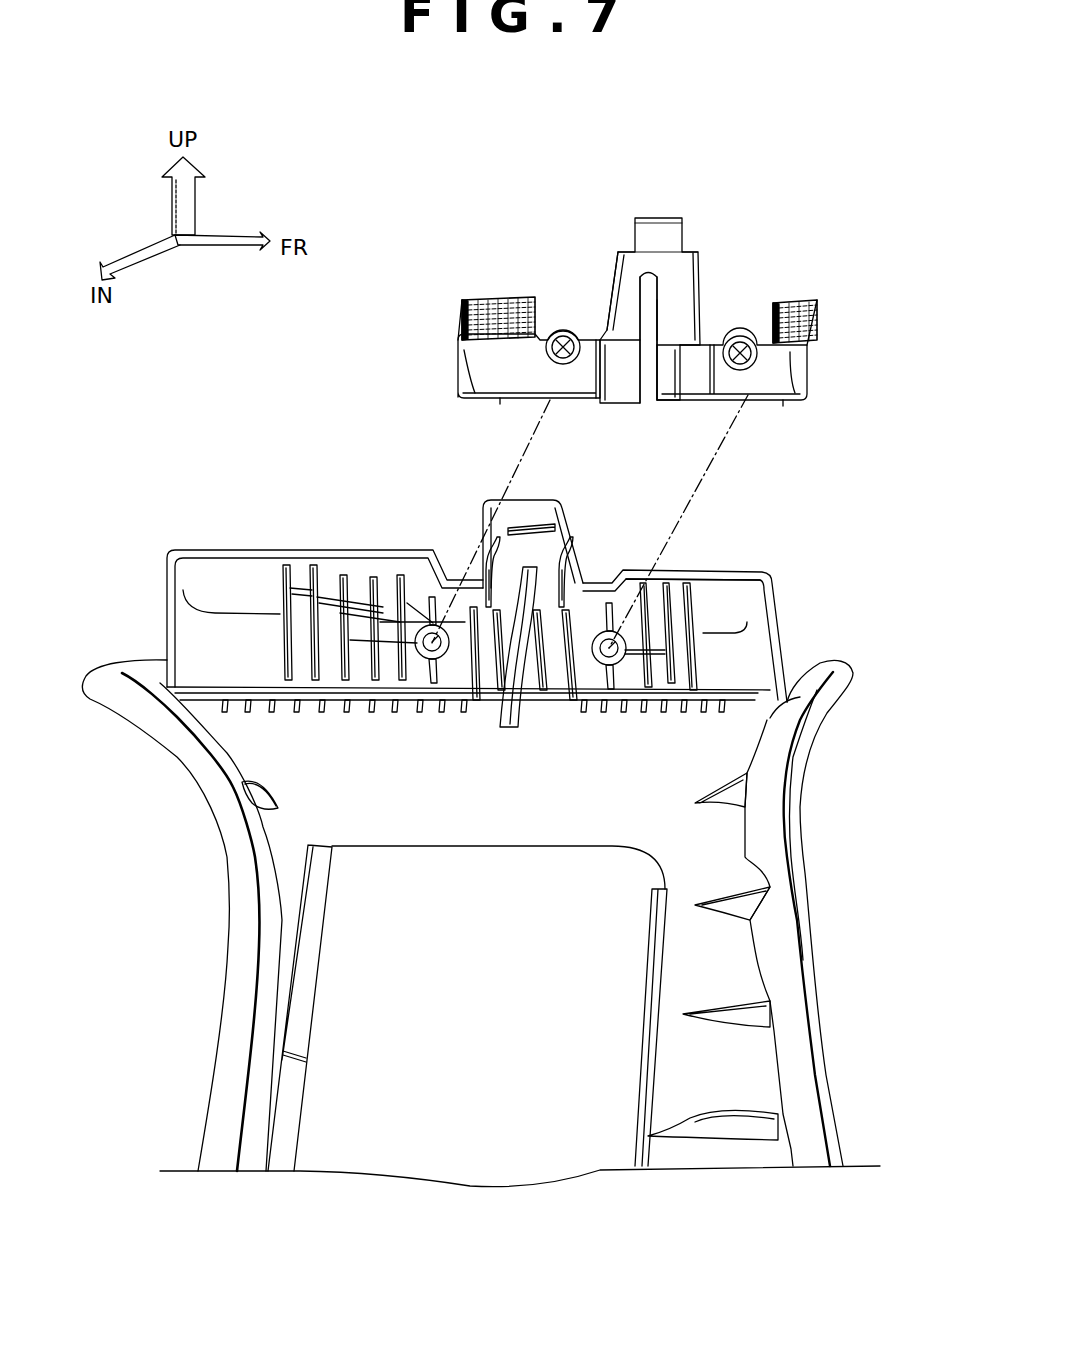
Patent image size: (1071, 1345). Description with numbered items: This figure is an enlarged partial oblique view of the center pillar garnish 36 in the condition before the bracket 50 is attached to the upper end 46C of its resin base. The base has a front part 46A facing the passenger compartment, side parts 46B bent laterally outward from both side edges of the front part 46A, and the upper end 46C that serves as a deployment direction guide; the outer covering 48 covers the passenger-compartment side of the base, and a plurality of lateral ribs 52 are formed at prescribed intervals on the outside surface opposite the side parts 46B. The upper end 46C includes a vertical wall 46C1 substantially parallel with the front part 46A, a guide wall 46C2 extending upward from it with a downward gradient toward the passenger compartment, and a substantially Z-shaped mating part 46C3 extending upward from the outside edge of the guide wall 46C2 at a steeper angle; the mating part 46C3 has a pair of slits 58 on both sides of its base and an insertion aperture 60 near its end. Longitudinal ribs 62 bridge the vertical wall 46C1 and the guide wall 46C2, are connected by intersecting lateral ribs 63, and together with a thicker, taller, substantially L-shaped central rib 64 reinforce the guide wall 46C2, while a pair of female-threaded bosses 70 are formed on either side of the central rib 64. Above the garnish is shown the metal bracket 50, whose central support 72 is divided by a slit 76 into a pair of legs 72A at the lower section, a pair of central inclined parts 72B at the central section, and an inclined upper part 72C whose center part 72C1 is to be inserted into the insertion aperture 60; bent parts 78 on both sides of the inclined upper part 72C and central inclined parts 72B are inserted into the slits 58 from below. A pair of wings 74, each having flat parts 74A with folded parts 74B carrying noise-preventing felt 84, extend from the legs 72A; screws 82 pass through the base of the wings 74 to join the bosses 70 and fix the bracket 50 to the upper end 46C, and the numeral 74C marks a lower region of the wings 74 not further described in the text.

The center pillar garnish 36 is at (190, 1092).
The front part 46A is at (725, 836).
The side parts 46B is at (803, 928).
The upper end 46C is at (785, 590).
The vertical wall 46C1 is at (752, 650).
The guide wall 46C2 is at (730, 603).
The mating part 46C3 is at (485, 515).
The outer covering 48 is at (243, 938).
The bracket 50 is at (715, 225).
The lateral ribs 52 is at (757, 1120).
The slits 58 is at (487, 548).
The insertion aperture 60 is at (537, 530).
The longitudinal ribs 62 is at (318, 690).
The lateral ribs 63 is at (335, 620).
The central rib 64 is at (520, 718).
The bosses 70 is at (430, 665).
The central support 72 is at (703, 267).
The legs 72A is at (625, 392).
The central inclined parts 72B is at (625, 300).
The inclined upper part 72C is at (690, 252).
The center part 72C1 is at (650, 224).
The wings 74 is at (440, 365).
The flat parts 74A is at (478, 376).
The folded parts 74B is at (463, 318).
The bracket lower edge 74C is at (500, 398).
The slit 76 is at (652, 404).
The bent parts 78 is at (613, 300).
The screws 82 is at (565, 365).
The felt 84 is at (505, 298).